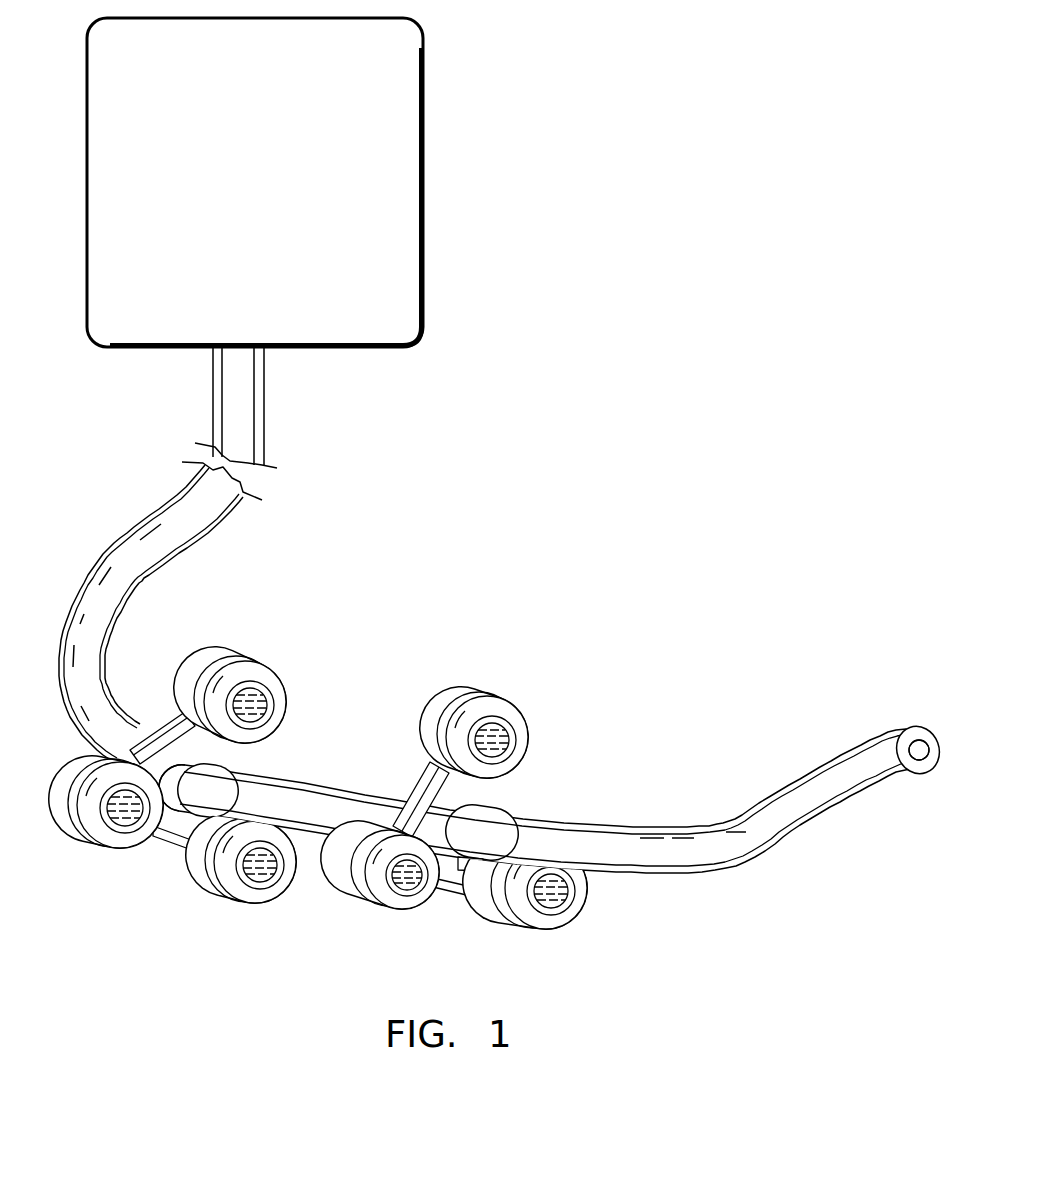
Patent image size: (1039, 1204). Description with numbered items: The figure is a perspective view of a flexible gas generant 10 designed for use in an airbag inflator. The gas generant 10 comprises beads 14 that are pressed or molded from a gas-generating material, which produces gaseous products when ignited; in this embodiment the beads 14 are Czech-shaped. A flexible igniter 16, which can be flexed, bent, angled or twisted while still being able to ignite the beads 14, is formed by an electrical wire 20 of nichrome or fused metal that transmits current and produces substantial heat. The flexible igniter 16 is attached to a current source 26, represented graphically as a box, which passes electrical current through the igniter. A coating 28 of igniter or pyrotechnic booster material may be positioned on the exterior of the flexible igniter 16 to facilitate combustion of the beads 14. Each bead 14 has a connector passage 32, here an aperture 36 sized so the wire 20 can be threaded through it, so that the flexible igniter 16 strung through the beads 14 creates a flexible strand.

The flexible gas generant 10 is at (358, 662).
The bead 14 is at (247, 667).
The flexible igniter 16 is at (605, 847).
The electrical wire 20 is at (730, 847).
The current source 26 is at (377, 265).
The coating 28 is at (908, 730).
The connector passage 32 is at (183, 833).
The aperture 36 is at (220, 765).